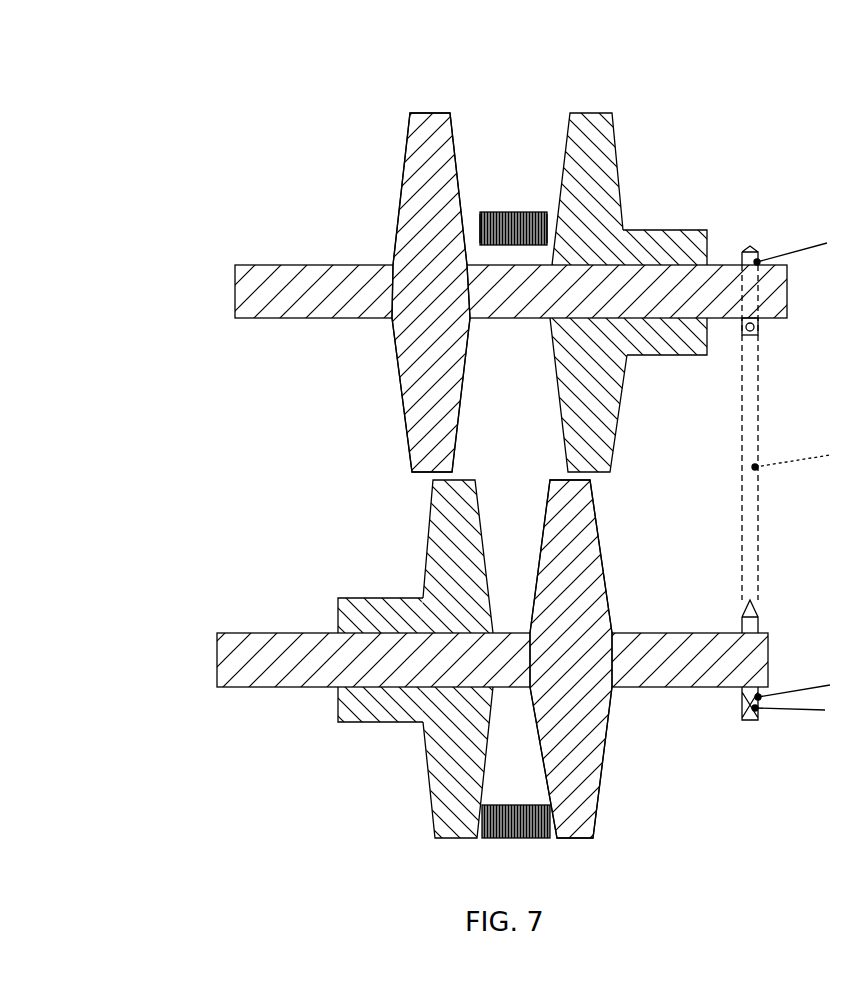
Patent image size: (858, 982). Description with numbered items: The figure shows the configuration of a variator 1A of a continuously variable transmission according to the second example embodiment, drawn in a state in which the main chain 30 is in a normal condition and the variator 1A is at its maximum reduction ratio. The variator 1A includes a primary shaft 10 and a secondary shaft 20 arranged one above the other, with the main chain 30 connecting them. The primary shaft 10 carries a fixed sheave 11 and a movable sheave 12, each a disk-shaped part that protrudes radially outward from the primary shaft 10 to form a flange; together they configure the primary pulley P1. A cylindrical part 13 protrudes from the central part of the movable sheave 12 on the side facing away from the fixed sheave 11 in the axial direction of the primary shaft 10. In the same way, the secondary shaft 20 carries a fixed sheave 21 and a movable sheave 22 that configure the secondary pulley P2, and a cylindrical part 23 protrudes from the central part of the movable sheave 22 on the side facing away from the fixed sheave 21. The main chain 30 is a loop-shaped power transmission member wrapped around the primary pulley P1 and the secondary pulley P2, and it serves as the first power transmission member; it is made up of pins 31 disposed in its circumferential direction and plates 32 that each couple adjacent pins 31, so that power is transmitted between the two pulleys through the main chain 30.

The variator 1A is at (253, 158).
The primary pulley P1 is at (375, 136).
The secondary pulley P2 is at (633, 791).
The primary shaft 10 is at (236, 285).
The fixed sheave 11 is at (412, 115).
The movable sheave 12 is at (608, 118).
The cylindrical part 13 is at (663, 233).
The secondary shaft 20 is at (218, 648).
The fixed sheave 21 is at (592, 818).
The movable sheave 22 is at (435, 815).
The cylindrical part 23 is at (362, 722).
The main chain 30 is at (515, 184).
The pins 31 is at (477, 217).
The plates 32 is at (546, 217).